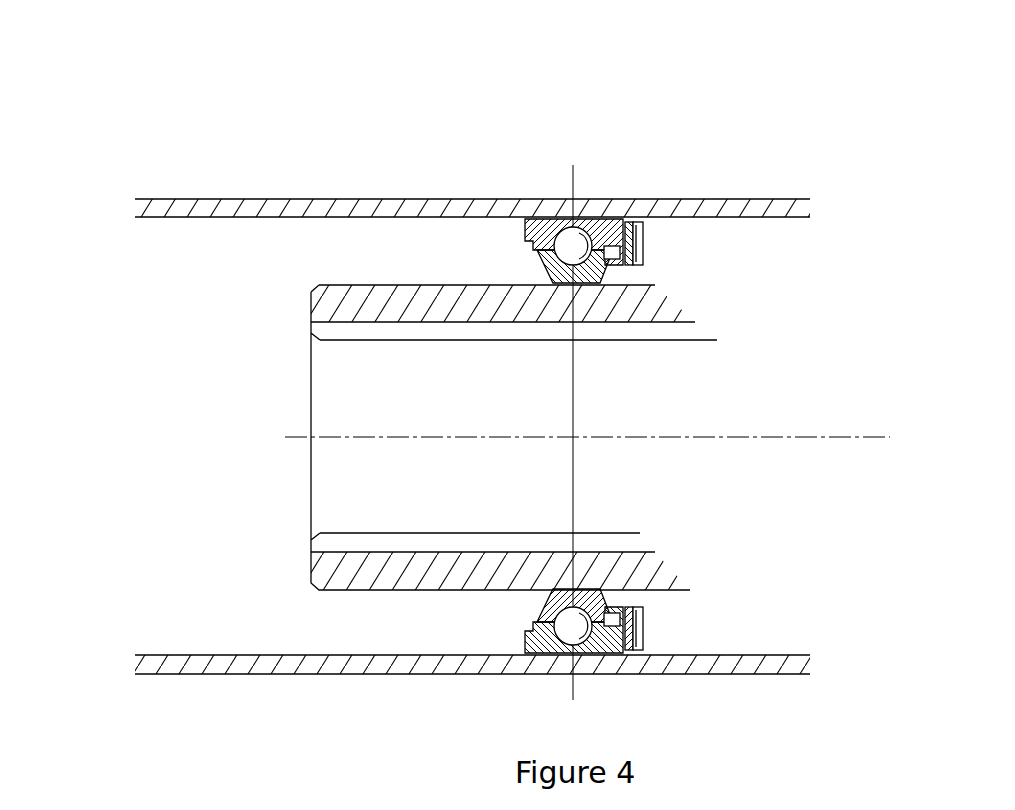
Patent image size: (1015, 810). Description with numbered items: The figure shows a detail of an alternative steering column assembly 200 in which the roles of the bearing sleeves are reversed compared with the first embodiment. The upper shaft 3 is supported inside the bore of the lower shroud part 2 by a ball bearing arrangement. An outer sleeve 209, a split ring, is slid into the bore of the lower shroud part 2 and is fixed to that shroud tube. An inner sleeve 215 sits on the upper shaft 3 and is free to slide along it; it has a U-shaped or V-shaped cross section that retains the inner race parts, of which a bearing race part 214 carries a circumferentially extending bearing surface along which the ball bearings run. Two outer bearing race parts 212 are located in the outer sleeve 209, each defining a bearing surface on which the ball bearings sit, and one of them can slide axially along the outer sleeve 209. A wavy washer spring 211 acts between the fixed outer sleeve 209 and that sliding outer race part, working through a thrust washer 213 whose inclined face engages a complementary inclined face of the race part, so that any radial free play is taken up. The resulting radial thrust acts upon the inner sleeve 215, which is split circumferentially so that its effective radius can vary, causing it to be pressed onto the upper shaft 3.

The lower shroud part 2 is at (232, 199).
The upper shaft 3 is at (374, 285).
The steering column assembly 200 is at (587, 212).
The outer sleeve 209 is at (545, 215).
The wavy washer spring 211 is at (638, 252).
The outer bearing race part 212 is at (640, 236).
The thrust washer 213 is at (643, 219).
The bearing race part 214 is at (538, 268).
The inner sleeve 215 is at (546, 272).